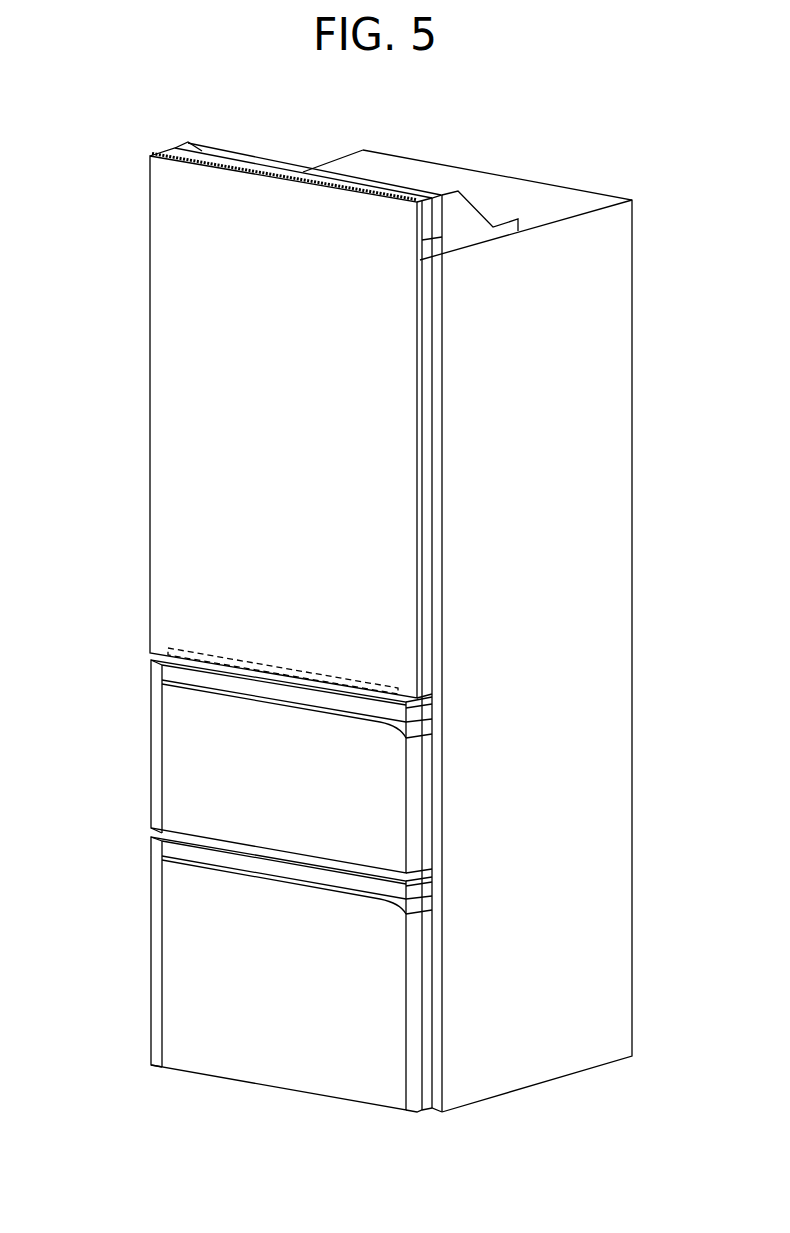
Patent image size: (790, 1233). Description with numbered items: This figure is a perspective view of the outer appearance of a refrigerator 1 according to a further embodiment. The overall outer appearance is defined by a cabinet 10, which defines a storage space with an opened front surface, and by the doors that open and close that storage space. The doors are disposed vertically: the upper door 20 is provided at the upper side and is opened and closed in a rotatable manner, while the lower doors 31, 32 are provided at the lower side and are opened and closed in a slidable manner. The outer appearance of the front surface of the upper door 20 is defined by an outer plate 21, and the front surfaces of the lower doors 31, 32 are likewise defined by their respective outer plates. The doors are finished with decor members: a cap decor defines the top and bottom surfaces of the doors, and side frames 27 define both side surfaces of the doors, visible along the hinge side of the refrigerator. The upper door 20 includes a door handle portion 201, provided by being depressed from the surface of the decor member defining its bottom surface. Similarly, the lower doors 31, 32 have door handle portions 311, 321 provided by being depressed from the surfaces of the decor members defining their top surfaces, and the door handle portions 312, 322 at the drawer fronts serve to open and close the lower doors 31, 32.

The refrigerator 1 is at (91, 133).
The cabinet 10 is at (608, 420).
The side frame 27 is at (428, 313).
The upper door 20 is at (134, 550).
The outer plate 21 is at (206, 385).
The door handle portion 201 is at (180, 648).
The lower door 31 is at (134, 745).
The door handle portion 311 is at (151, 668).
The first drawer handle 312 is at (382, 712).
The lower door 32 is at (134, 950).
The door handle portion 321 is at (151, 840).
The door handle portion 322 is at (382, 888).